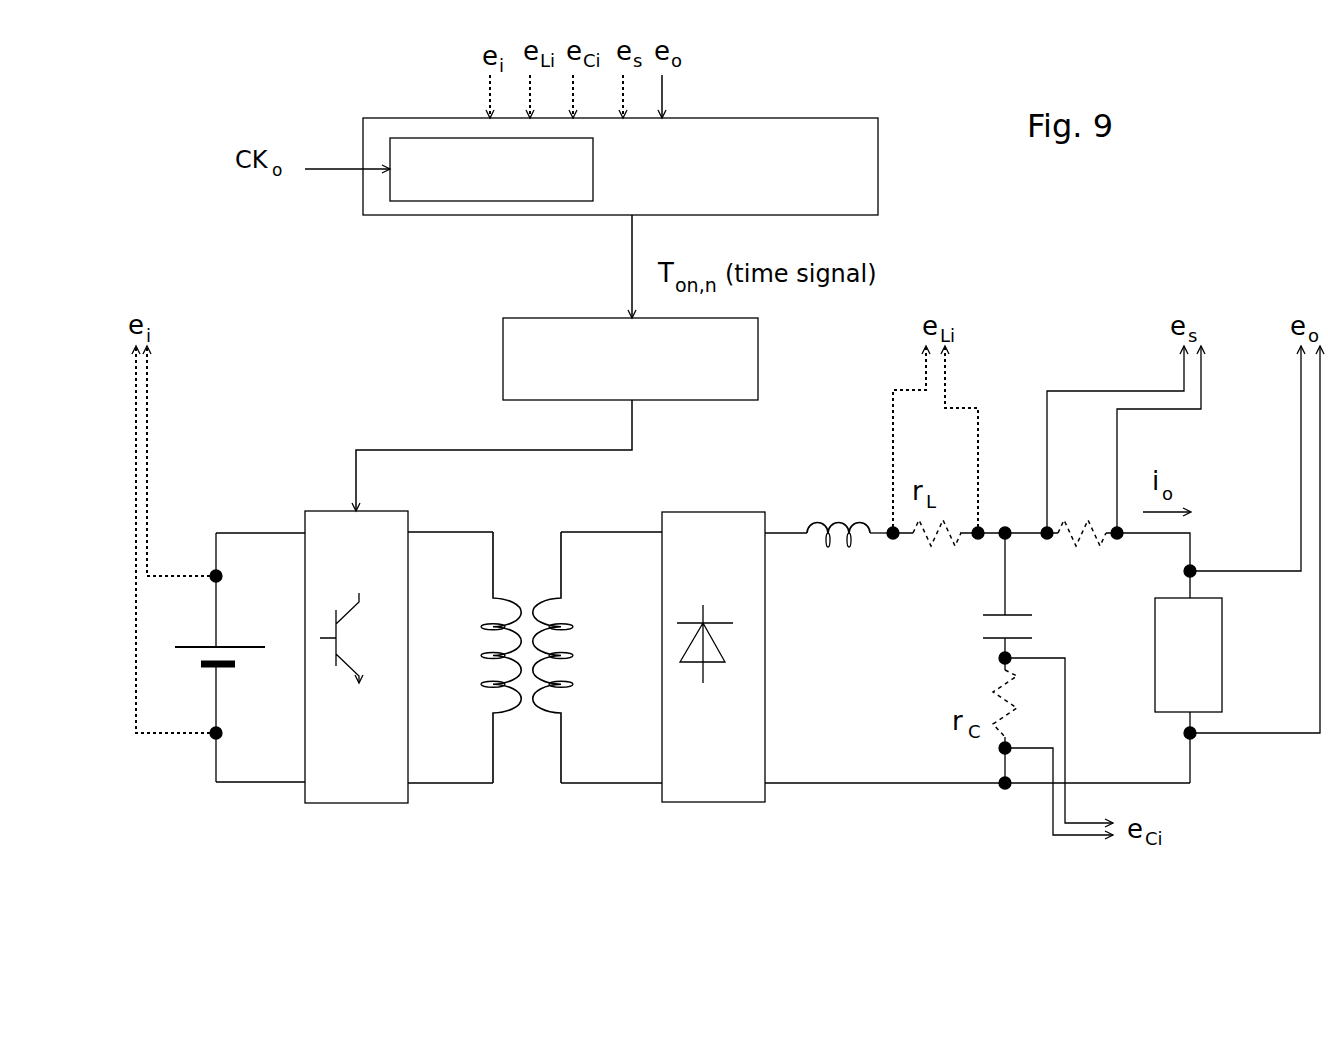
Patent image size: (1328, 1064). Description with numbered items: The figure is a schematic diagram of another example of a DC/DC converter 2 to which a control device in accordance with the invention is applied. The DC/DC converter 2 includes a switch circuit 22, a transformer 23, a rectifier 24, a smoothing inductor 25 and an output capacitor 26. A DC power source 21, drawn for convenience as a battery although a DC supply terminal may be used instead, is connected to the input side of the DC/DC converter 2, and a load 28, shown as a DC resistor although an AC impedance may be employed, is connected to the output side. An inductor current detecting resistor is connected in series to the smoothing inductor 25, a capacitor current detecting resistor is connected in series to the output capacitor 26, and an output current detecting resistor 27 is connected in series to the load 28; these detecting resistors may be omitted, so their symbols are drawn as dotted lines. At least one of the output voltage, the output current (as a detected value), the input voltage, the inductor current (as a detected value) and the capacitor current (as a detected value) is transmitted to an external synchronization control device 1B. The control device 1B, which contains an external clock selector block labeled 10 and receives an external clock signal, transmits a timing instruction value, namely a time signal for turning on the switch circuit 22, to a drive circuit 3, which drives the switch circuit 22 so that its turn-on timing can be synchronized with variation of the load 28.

The external synchronization control device 1B is at (878, 167).
The external clock selector 10 is at (593, 188).
The drive circuit 3 is at (758, 355).
The DC/DC converter 2 is at (271, 447).
The DC power source 21 is at (209, 642).
The switch circuit 22 is at (328, 511).
The transformer 23 is at (526, 555).
The rectifier 24 is at (716, 512).
The smoothing inductor 25 is at (851, 502).
The output capacitor 26 is at (978, 627).
The output current detecting resistor 27 is at (1083, 544).
The load 28 is at (1154, 653).